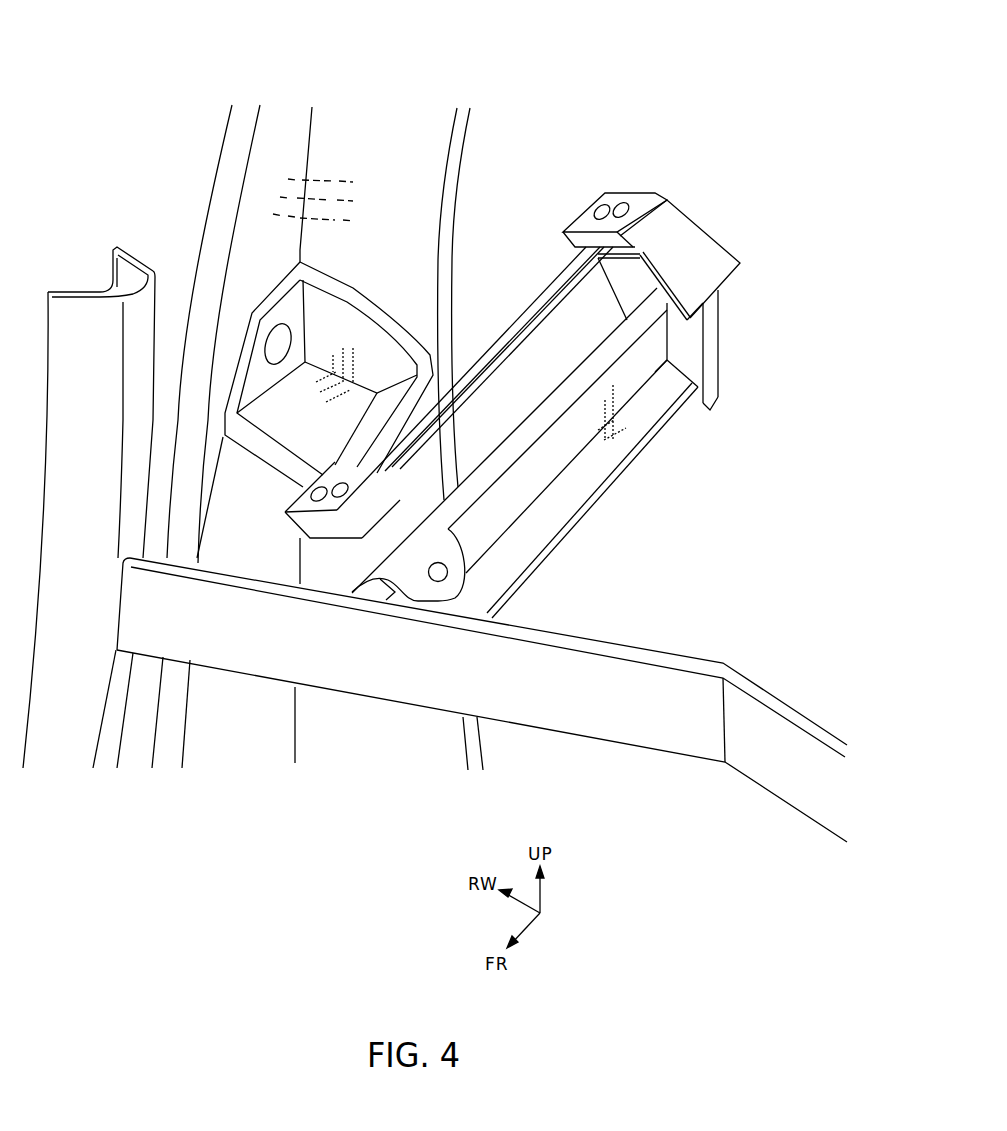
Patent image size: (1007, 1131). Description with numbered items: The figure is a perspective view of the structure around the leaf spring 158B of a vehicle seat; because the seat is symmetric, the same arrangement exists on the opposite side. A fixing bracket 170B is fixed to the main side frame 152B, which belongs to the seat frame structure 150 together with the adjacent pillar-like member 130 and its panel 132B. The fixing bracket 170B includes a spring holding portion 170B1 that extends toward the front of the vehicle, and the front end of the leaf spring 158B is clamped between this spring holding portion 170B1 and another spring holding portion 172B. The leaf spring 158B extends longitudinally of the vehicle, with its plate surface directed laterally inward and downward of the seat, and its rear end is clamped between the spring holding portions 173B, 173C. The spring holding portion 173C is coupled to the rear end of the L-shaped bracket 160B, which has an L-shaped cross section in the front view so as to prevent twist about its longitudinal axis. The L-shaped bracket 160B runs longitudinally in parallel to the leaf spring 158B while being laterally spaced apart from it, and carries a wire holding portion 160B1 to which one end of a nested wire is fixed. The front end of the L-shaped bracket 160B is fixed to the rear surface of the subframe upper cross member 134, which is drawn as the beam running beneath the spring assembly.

The pillar 130 is at (89, 454).
The pillar inner panel 132B is at (83, 312).
The subframe upper cross member 134 is at (645, 712).
The roof side rail 150 is at (364, 395).
The main side frame 152B is at (427, 155).
The leaf spring 158B is at (493, 357).
The L-shaped bracket 160B is at (663, 390).
The wire holding portion 160B1 is at (455, 562).
The fixing bracket 170B is at (356, 330).
The spring holding portion 170B1 is at (300, 497).
The spring holding portion 172B is at (330, 540).
The spring holding portion 173B is at (617, 198).
The spring holding portion 173C is at (720, 232).